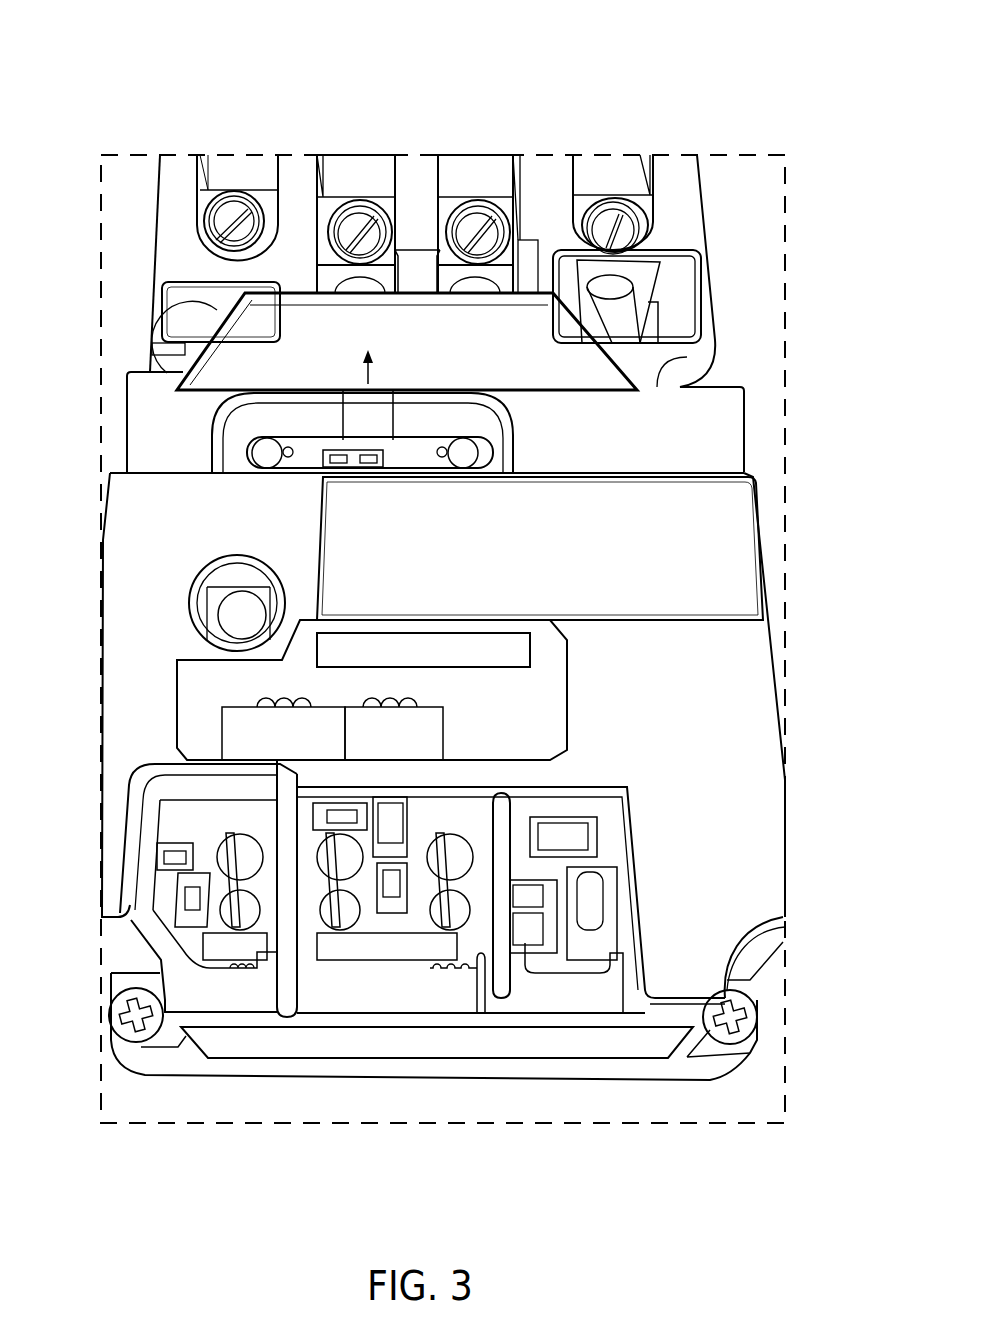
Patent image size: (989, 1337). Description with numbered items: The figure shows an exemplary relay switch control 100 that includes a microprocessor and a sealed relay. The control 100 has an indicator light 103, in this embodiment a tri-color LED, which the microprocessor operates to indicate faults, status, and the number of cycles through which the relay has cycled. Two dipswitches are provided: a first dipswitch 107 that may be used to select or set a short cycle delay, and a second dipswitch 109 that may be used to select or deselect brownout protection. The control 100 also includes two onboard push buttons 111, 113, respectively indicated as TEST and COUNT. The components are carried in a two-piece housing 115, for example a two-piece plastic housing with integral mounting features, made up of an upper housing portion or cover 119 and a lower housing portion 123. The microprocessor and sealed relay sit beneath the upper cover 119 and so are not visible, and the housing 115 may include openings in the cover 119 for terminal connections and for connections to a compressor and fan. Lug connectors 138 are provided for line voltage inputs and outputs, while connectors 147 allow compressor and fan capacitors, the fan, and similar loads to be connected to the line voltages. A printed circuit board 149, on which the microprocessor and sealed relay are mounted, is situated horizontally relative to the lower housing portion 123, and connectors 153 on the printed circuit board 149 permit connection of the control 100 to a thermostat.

The relay switch control 100 is at (148, 42).
The indicator light 103 is at (243, 615).
The first dipswitch 107 is at (162, 372).
The second dipswitch 109 is at (373, 455).
The push button 111 is at (267, 453).
The push button 113 is at (463, 458).
The two-piece housing 115 is at (740, 727).
The upper housing portion or cover 119 is at (702, 1063).
The lower housing portion 123 is at (604, 1080).
The lug connectors 138 is at (637, 192).
The connectors 147 is at (658, 307).
The printed circuit board 149 is at (465, 955).
The connectors 153 is at (233, 860).